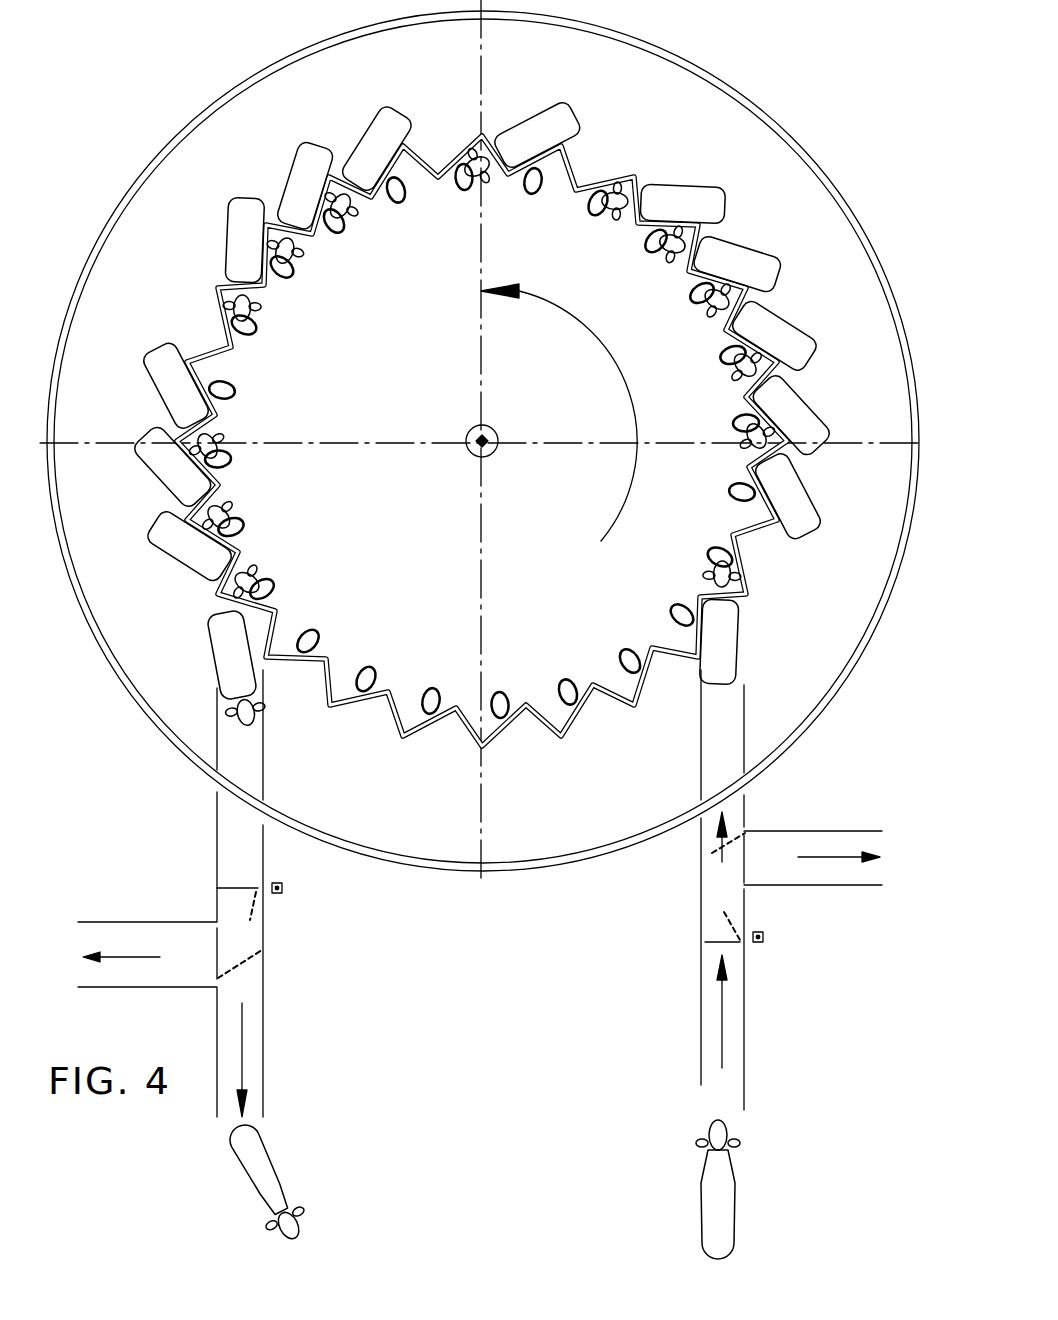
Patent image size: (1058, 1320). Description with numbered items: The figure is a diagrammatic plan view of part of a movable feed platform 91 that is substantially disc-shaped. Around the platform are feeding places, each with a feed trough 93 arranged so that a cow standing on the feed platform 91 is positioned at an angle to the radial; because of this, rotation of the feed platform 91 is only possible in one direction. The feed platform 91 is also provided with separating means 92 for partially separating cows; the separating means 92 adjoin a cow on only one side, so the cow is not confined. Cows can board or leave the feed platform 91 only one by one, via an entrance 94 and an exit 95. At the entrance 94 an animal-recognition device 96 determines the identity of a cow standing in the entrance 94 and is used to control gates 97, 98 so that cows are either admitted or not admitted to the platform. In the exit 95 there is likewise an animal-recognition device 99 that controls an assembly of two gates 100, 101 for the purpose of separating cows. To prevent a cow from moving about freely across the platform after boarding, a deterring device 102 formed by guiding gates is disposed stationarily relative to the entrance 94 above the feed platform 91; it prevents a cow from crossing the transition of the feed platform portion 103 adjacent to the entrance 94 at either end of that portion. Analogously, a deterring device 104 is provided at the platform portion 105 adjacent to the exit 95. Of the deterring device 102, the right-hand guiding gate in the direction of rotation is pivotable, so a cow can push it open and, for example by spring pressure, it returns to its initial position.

The feed platform 91 is at (632, 102).
The separating means 92 is at (216, 488).
The feed trough 93 is at (264, 589).
The entrance 94 is at (745, 1035).
The exit 95 is at (264, 990).
The animal-recognition device 96 is at (764, 937).
The gate 97 is at (705, 942).
The gate 98 is at (748, 823).
The animal-recognition device 99 is at (283, 888).
The gate 100 is at (257, 912).
The gate 101 is at (236, 968).
The deterring device 102 is at (745, 733).
The feed platform portion 103 is at (725, 780).
The deterring device 104 is at (263, 745).
The platform portion 105 is at (240, 767).